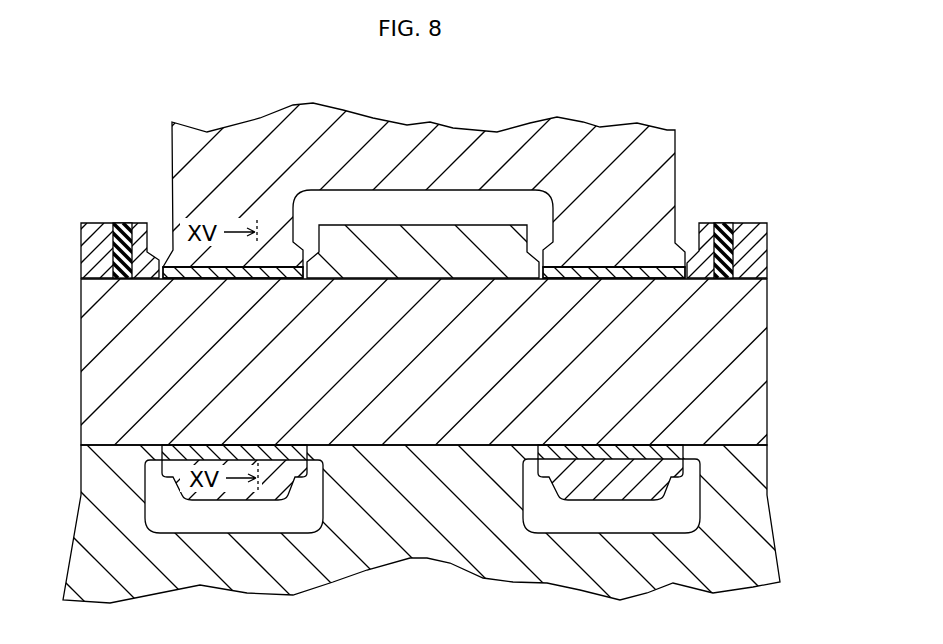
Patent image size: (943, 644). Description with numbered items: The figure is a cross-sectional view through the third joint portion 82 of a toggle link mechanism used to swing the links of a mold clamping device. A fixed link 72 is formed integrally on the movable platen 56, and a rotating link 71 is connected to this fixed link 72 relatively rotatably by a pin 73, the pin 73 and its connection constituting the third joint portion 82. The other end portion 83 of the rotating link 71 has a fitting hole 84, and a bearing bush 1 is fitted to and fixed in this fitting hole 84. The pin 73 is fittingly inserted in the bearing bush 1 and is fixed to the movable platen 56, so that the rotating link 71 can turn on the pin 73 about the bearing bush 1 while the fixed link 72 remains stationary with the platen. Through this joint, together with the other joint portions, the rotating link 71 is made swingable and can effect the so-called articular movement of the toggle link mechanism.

The bearing bush 1 is at (185, 272).
The movable platen 56 is at (425, 540).
The rotating link 71 is at (423, 150).
The fixed link 72 is at (88, 253).
The pin 73 is at (720, 348).
The third joint portion 82 is at (690, 210).
The other end portion 83 is at (270, 482).
The fitting hole 84 is at (272, 273).